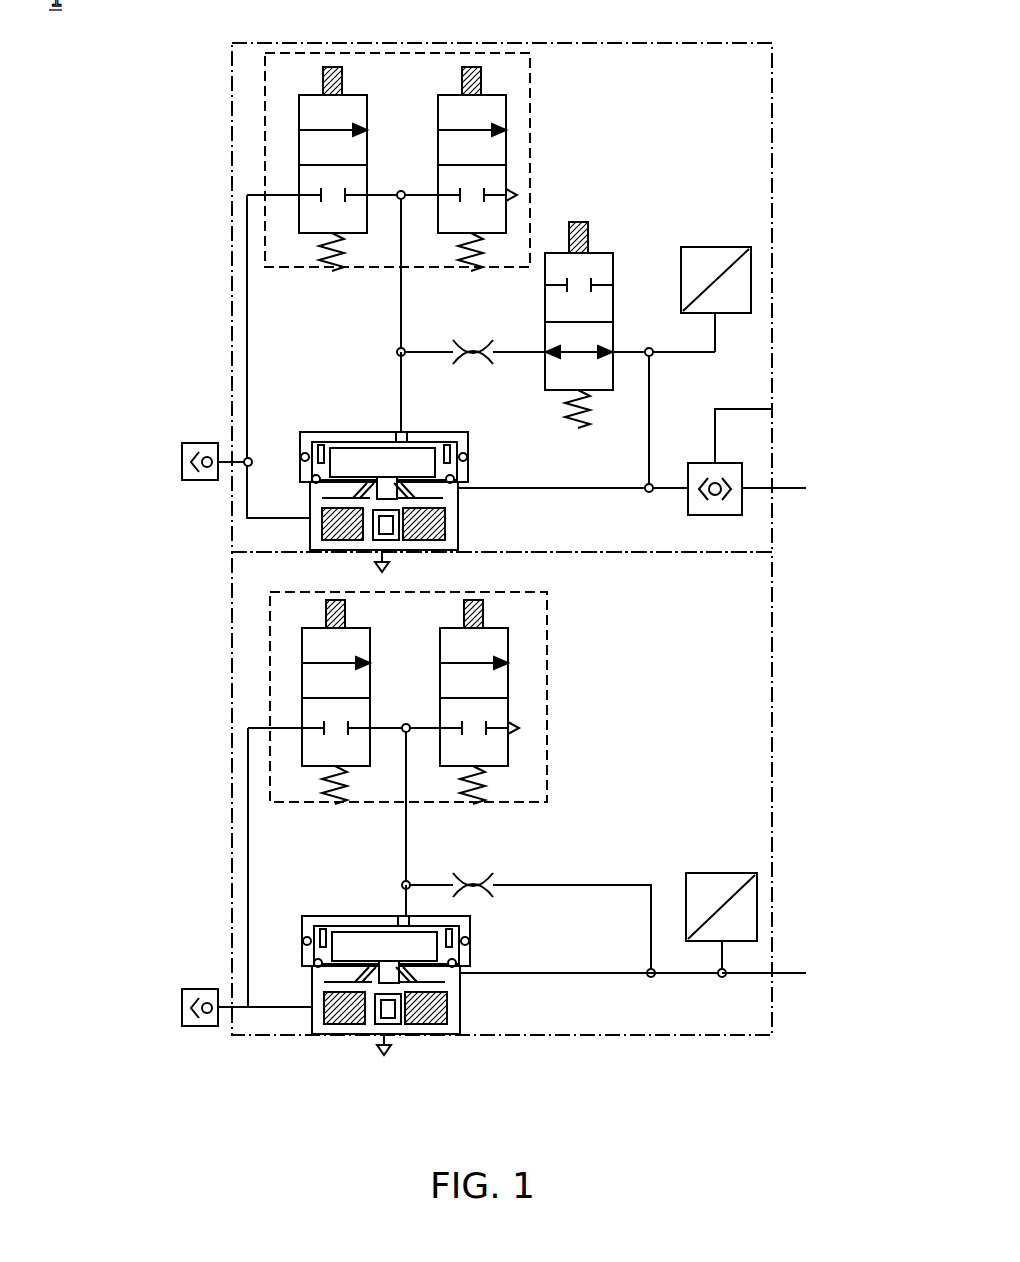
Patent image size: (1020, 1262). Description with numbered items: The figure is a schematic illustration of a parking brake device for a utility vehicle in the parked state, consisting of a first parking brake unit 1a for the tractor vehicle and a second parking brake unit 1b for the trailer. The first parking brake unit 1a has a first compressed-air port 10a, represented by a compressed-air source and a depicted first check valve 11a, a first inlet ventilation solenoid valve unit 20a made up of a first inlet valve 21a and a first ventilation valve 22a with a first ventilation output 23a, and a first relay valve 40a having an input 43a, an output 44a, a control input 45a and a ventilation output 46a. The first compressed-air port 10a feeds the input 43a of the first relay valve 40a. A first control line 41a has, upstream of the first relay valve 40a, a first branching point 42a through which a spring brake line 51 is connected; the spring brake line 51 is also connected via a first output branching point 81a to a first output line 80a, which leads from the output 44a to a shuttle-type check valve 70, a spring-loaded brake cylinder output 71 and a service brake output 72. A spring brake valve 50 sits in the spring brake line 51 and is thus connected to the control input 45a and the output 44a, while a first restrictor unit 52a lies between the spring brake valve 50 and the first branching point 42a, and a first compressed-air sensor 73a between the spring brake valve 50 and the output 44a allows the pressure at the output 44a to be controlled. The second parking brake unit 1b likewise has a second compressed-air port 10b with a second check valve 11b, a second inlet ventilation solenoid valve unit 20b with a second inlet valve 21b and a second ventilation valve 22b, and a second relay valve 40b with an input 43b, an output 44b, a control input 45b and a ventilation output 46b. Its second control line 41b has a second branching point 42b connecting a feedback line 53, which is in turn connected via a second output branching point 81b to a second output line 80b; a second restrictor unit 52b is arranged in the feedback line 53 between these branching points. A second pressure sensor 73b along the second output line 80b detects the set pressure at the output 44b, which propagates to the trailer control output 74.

The first parking brake unit 1a is at (772, 82).
The second parking brake unit 1b is at (772, 620).
The first compressed-air port 10a is at (218, 480).
The second compressed-air port 10b is at (222, 1027).
The first check valve 11a is at (182, 462).
The second check valve 11b is at (182, 1007).
The first inlet ventilation solenoid valve unit 20a is at (265, 83).
The second inlet ventilation solenoid valve unit 20b is at (270, 650).
The first inlet valve 21a is at (299, 143).
The second inlet valve 21b is at (302, 710).
The first ventilation valve 22a is at (506, 107).
The second ventilation valve 22b is at (508, 675).
The first ventilation output 23a is at (517, 195).
The first relay valve 40a is at (300, 438).
The second relay valve 40b is at (302, 940).
The first control line 41a is at (401, 323).
The second control line 41b is at (406, 850).
The first branching point 42a is at (401, 352).
The second branching point 42b is at (406, 885).
The input 43a is at (310, 520).
The input 43b is at (300, 1025).
The output 44a is at (460, 489).
The output 44b is at (470, 975).
The control input 45a is at (401, 418).
The control input 45b is at (406, 908).
The ventilation output 46a is at (390, 555).
The ventilation output 46b is at (378, 1040).
The spring brake valve 50 is at (613, 253).
The spring brake line 51 is at (649, 408).
The first restrictor unit 52a is at (473, 340).
The second restrictor unit 52b is at (473, 875).
The feedback line 53 is at (612, 885).
The shuttle-type check valve 70 is at (742, 498).
The spring-loaded brake cylinder output 71 is at (772, 409).
The service brake output 72 is at (806, 488).
The first compressed-air sensor 73a is at (751, 288).
The second pressure sensor 73b is at (757, 912).
The trailer control output 74 is at (806, 973).
The first output line 80a is at (600, 488).
The second output line 80b is at (685, 975).
The first output branching point 81a is at (650, 486).
The second output branching point 81b is at (651, 977).